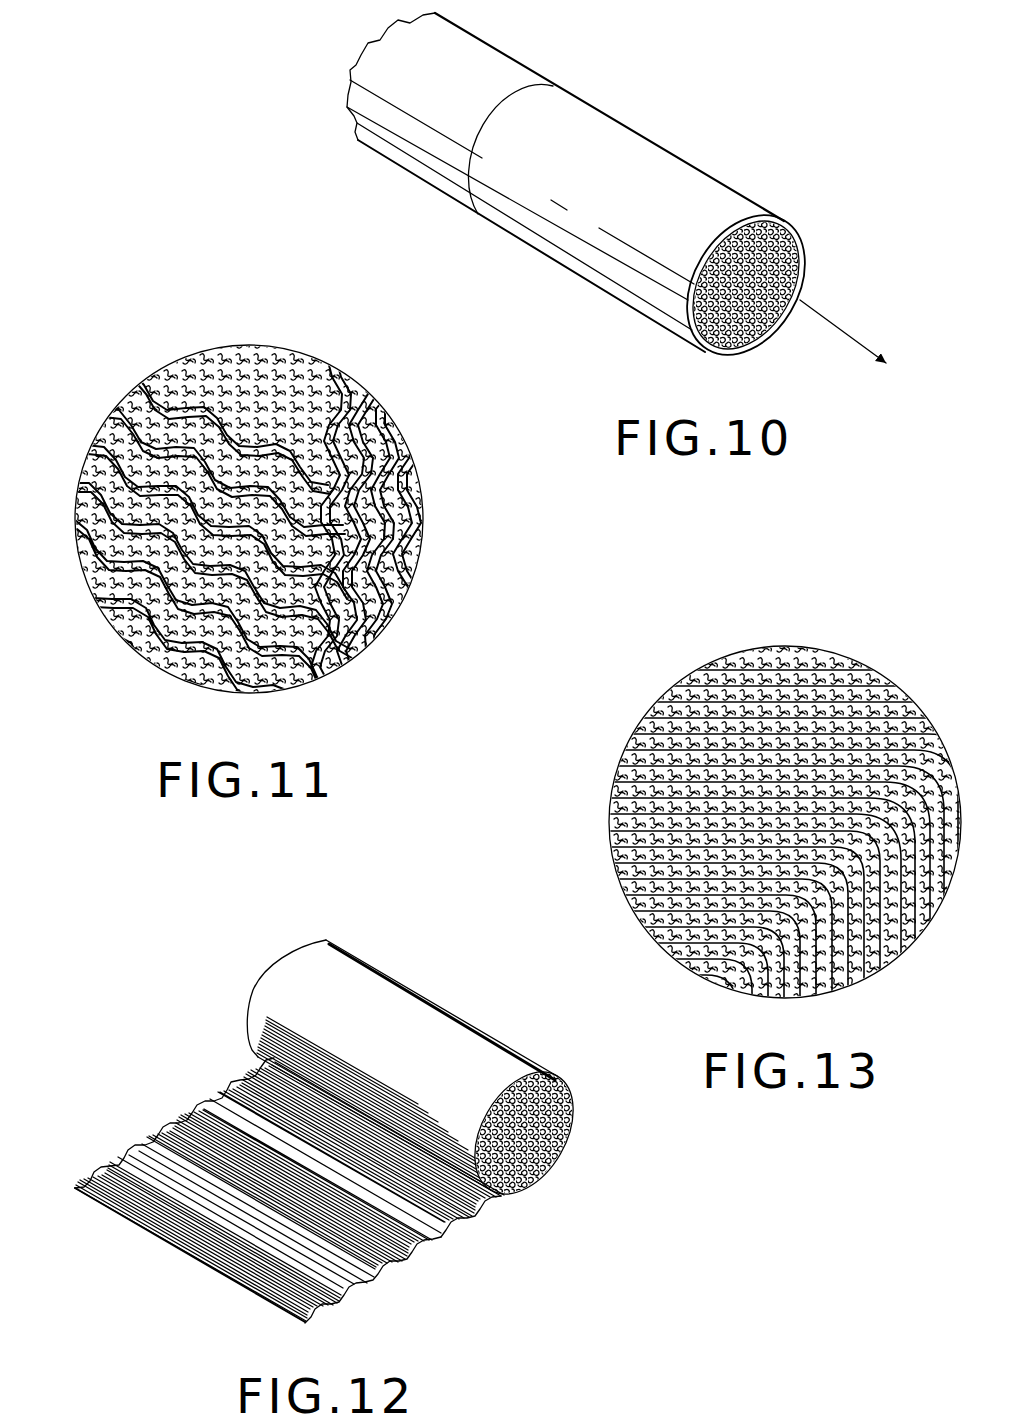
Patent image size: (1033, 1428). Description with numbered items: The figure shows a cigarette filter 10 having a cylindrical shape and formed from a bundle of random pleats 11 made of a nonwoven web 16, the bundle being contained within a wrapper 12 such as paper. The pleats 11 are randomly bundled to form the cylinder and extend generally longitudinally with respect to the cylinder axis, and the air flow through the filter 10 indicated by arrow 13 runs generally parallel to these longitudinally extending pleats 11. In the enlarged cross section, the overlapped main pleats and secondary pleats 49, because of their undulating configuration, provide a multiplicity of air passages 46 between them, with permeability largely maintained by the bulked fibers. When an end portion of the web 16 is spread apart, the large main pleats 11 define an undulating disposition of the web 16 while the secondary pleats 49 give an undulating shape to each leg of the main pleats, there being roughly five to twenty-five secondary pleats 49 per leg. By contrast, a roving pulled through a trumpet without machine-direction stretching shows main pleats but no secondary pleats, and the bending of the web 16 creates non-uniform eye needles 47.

In FIG. 10, the cigarette filter 10 is at (692, 143).
In FIG. 12, the cigarette filter 10 is at (411, 970).
In FIG. 10, the pleats 11 is at (800, 255).
In FIG. 11, the pleats 11 is at (307, 437).
In FIG. 12, the pleats 11 is at (411, 1246).
In FIG. 10, the wrapper 12 is at (781, 222).
In FIG. 10, the arrow 13 is at (858, 326).
In FIG. 11, the web 16 is at (242, 393).
In FIG. 13, the web 16 is at (745, 679).
In FIG. 12, the web 16 is at (180, 1185).
In FIG. 11, the air passages 46 is at (203, 385).
In FIG. 13, the eye needles 47 is at (884, 677).
In FIG. 12, the secondary pleats 49 is at (460, 1217).